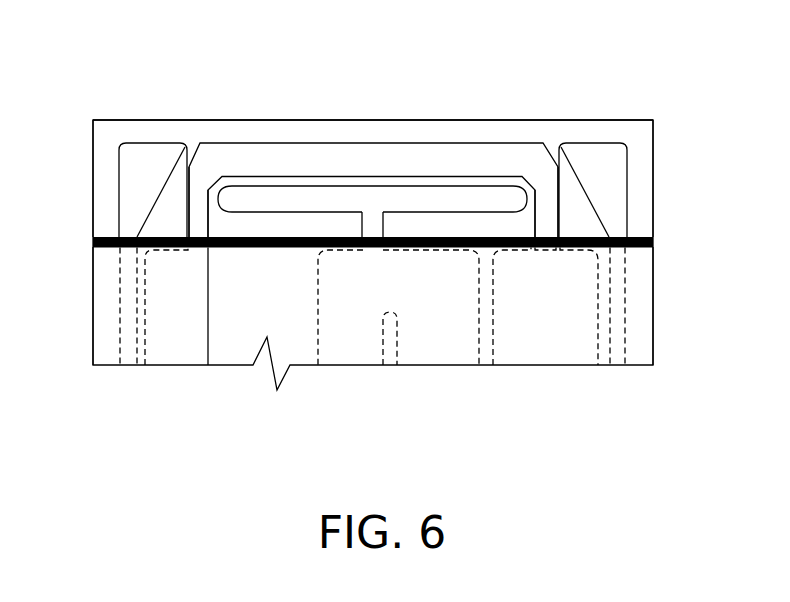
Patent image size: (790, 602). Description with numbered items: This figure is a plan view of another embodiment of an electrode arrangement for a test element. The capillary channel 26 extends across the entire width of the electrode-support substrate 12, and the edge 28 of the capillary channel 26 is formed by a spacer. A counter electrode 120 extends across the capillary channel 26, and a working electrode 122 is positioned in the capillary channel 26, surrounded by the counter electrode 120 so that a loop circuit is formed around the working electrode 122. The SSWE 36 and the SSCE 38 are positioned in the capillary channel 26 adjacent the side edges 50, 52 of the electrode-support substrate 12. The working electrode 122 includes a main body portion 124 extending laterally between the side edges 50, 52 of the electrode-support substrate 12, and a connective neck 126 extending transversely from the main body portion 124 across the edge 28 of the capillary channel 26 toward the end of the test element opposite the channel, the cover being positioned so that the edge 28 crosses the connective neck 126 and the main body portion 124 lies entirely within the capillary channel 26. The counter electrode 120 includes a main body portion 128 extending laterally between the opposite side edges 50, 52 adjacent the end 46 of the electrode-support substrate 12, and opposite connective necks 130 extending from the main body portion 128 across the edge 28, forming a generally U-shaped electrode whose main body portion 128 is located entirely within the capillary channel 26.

The electrode-support substrate 12 is at (668, 308).
The capillary channel 26 is at (660, 129).
The edge of the capillary channel 28 is at (587, 238).
The SSWE 36 is at (157, 143).
The SSCE 38 is at (602, 143).
The end of the electrode-support substrate 46 is at (558, 120).
The side edge of the electrode-support substrate 50 is at (93, 327).
The side edge of the electrode-support substrate 52 is at (653, 350).
The counter electrode 120 is at (371, 229).
The working electrode 122 is at (282, 186).
The main body portion of the working electrode 124 is at (470, 184).
The connective neck of the working electrode 126 is at (360, 227).
The main body portion of the counter electrode 128 is at (335, 145).
The connective necks of the counter electrode 130 is at (198, 204).